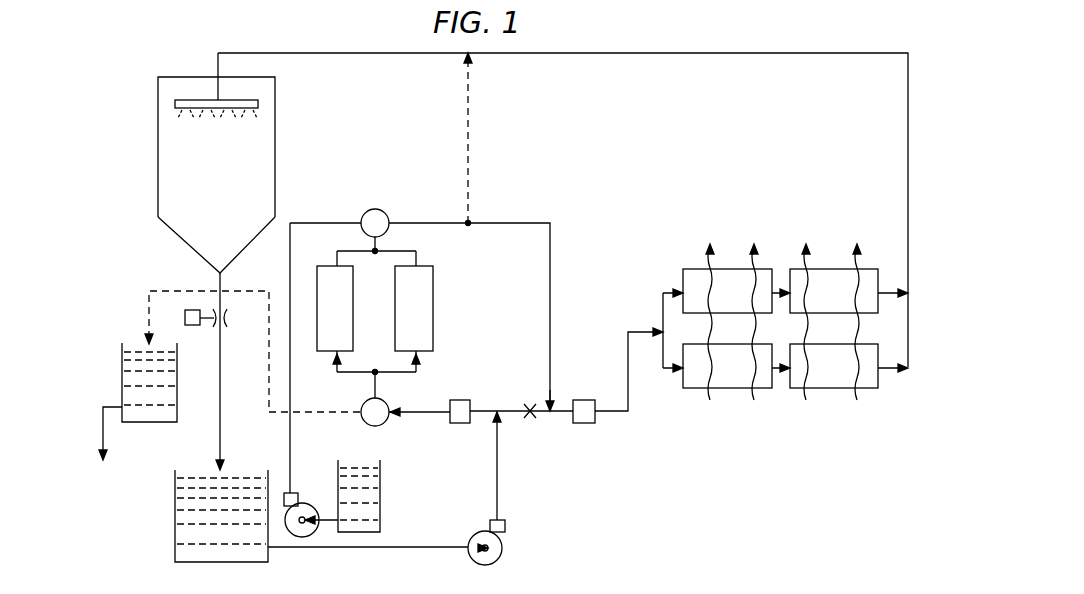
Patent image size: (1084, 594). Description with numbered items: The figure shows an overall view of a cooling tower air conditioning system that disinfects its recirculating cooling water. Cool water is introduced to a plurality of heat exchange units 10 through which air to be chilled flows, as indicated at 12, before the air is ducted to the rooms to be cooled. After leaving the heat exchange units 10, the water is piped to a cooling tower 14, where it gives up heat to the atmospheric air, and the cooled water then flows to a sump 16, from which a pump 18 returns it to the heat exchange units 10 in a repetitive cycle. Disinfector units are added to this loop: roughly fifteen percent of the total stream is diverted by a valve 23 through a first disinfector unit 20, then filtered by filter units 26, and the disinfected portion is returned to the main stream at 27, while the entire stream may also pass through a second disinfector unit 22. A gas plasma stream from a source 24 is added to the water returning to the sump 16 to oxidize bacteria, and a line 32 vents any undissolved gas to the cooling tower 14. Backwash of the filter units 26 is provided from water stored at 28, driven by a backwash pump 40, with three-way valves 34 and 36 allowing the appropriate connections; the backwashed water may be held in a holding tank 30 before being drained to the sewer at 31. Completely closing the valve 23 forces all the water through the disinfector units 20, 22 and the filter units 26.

The heat exchange units 10 is at (662, 238).
The air flow 12 is at (755, 400).
The cooling tower 14 is at (275, 168).
The sump 16 is at (175, 522).
The pump 18 is at (503, 550).
The first disinfector unit 20 is at (465, 398).
The second disinfector unit 22 is at (588, 423).
The valve 23 is at (530, 420).
The gas plasma source 24 is at (192, 325).
The filter units 26 is at (400, 275).
The return point 27 is at (556, 406).
The backwash water storage 28 is at (382, 492).
The holding tank 30 is at (177, 410).
The sewer drain 31 is at (108, 460).
The vent line 32 is at (475, 62).
The three-way valve 34 is at (381, 210).
The three-way valve 36 is at (385, 425).
The backwash pump 40 is at (306, 503).